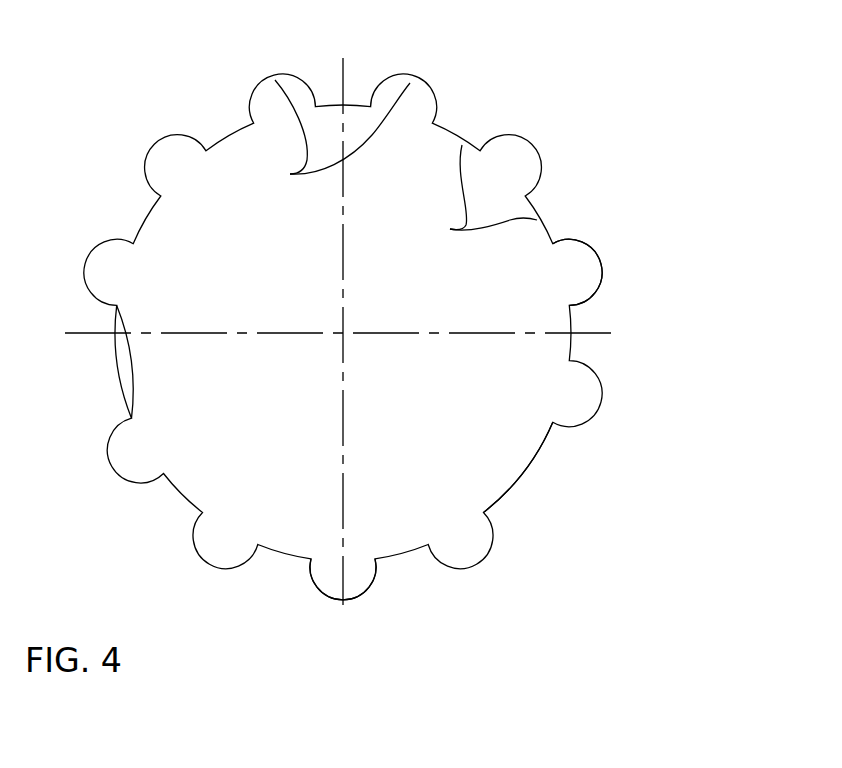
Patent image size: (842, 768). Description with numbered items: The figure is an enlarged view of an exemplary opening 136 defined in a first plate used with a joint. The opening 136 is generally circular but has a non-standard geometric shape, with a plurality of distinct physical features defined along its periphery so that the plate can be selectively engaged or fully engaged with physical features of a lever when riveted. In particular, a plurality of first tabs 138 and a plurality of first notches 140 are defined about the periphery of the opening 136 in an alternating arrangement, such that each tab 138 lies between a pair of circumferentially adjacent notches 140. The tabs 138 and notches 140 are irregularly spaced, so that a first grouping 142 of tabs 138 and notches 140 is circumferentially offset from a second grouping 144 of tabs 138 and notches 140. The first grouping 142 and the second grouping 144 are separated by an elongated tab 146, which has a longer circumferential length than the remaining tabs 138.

The opening 136 is at (502, 65).
The first tab 138 is at (451, 229).
The first notch 140 is at (291, 174).
The first grouping 142 is at (582, 185).
The second grouping 144 is at (430, 633).
The elongated tab 146 is at (119, 387).